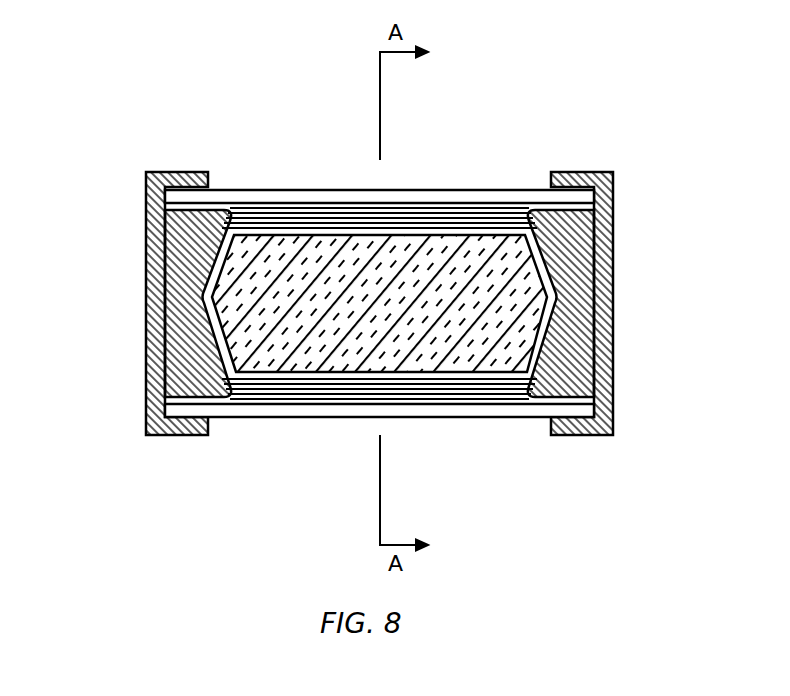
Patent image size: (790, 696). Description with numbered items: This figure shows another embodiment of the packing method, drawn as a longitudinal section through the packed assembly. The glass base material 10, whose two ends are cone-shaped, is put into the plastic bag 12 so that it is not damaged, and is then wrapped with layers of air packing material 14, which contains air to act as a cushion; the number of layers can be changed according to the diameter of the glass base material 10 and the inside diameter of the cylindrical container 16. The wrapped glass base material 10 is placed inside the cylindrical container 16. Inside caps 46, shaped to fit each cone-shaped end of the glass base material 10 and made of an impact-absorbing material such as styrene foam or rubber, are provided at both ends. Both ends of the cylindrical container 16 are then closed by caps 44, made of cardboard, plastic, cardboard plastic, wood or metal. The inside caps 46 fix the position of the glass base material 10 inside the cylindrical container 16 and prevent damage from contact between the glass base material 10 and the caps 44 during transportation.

The glass base material 10 is at (331, 264).
The plastic bag 12 is at (421, 243).
The air packing material 14 is at (498, 211).
The cylindrical container 16 is at (228, 194).
The caps 44 is at (153, 316).
The inside caps 46 is at (174, 234).